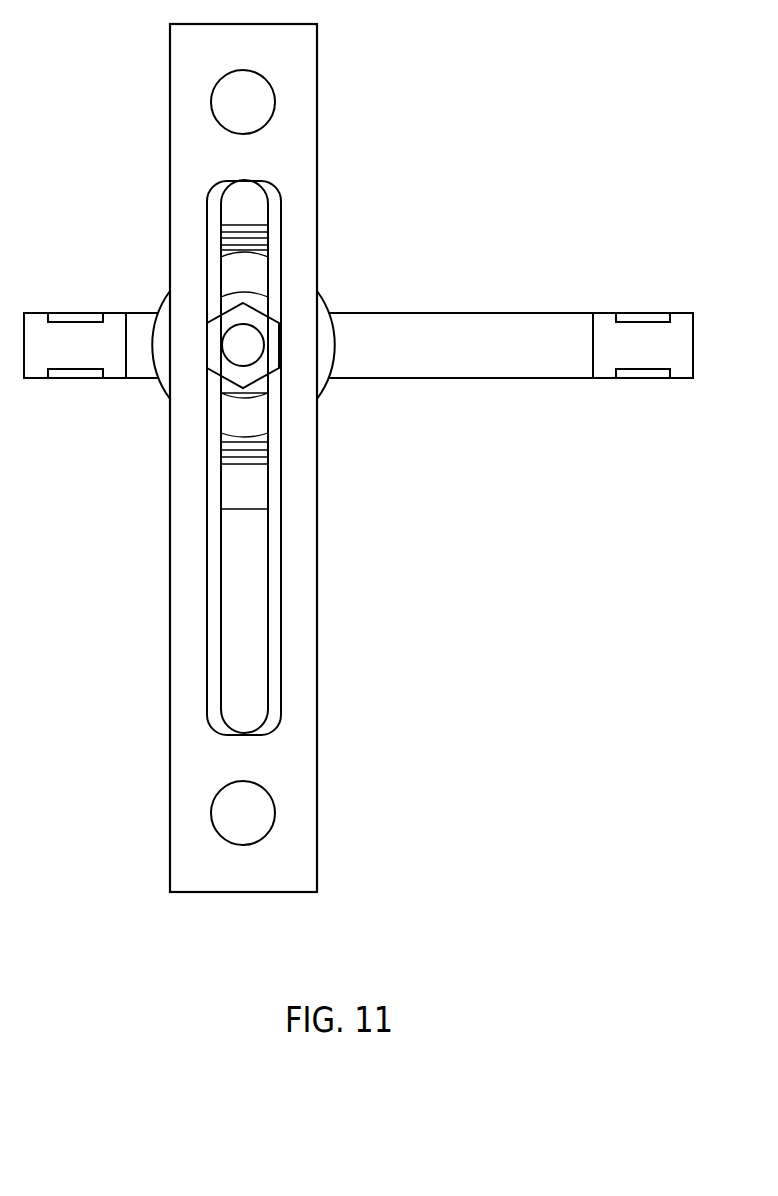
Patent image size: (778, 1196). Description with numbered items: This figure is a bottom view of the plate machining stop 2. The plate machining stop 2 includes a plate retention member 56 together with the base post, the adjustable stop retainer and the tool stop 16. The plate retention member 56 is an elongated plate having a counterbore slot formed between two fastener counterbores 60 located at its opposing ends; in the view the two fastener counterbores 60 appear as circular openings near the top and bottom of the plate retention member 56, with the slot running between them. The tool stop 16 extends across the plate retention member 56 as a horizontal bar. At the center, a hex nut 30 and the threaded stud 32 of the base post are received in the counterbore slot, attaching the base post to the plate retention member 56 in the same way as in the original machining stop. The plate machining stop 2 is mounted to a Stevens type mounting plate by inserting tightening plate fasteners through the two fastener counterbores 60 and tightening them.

The plate machining stop 2 is at (358, 458).
The tool stop 16 is at (563, 313).
The hex nut 30 is at (213, 323).
The threaded stud 32 is at (253, 345).
The plate retention member 56 is at (320, 587).
The fastener counterbores 60 is at (273, 88).